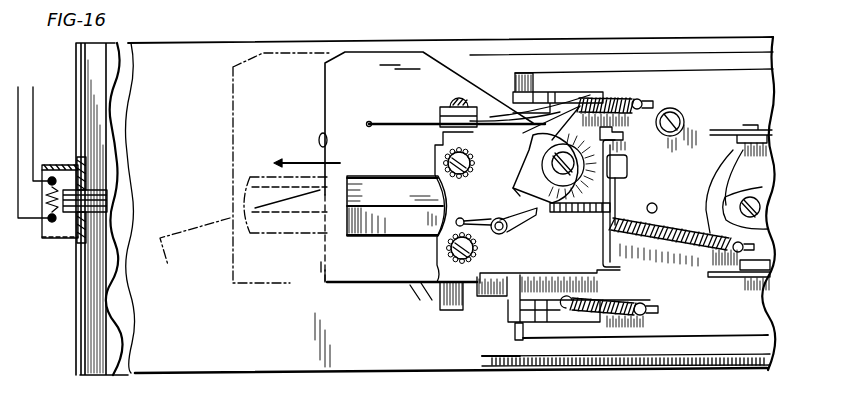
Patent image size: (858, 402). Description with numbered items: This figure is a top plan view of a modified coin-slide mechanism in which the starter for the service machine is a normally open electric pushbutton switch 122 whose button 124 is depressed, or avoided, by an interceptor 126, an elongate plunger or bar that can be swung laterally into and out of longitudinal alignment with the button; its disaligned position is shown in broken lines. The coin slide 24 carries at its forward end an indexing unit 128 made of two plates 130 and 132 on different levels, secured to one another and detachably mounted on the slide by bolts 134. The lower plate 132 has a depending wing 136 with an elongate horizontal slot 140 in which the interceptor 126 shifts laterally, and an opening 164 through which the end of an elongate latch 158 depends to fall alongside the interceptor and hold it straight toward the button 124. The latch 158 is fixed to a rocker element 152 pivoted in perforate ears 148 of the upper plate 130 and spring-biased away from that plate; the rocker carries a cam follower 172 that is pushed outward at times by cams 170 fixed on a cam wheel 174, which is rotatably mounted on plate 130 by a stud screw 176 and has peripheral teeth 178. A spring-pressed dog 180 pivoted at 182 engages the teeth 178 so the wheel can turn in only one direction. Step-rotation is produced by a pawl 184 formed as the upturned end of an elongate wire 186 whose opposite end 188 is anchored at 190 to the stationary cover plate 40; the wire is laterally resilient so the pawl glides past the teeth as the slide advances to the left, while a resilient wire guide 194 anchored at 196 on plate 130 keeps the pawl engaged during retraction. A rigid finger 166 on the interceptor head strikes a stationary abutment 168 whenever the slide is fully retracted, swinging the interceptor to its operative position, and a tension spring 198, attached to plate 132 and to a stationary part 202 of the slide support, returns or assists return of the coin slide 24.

The coin slide 24 is at (498, 353).
The stationary cover plate 40 is at (722, 78).
The electric pushbutton switch 122 is at (58, 239).
The button 124 is at (107, 200).
The interceptor 126 is at (240, 200).
The indexing unit 128 is at (459, 276).
The upper plate 130 is at (432, 265).
The plate 132 is at (362, 277).
The bolts 134 is at (446, 161).
The depending wing 136 is at (323, 276).
The elongate horizontal slot 140 is at (325, 267).
The depending perforate ears 148 is at (624, 136).
The rocker element 152 is at (608, 217).
The latch 158 is at (383, 222).
The opening 164 is at (347, 238).
The rigid finger 166 is at (488, 275).
The stationary abutment 168 is at (498, 303).
The cams 170 is at (528, 186).
The cam follower 172 is at (628, 170).
The cam wheel 174 is at (537, 199).
The stud screw 176 is at (538, 150).
The peripheral teeth 178 is at (522, 186).
The spring-pressed dog 180 is at (517, 227).
The pivot 182 is at (500, 238).
The pawl 184 is at (370, 122).
The elongate wire 186 is at (428, 120).
The opposite end of wire 188 is at (652, 115).
The anchor 190 is at (685, 116).
The resilient wire guide 194 is at (498, 116).
The anchor of wire guide 196 is at (460, 106).
The tension spring 198 is at (682, 228).
The stationary part 202 is at (753, 243).